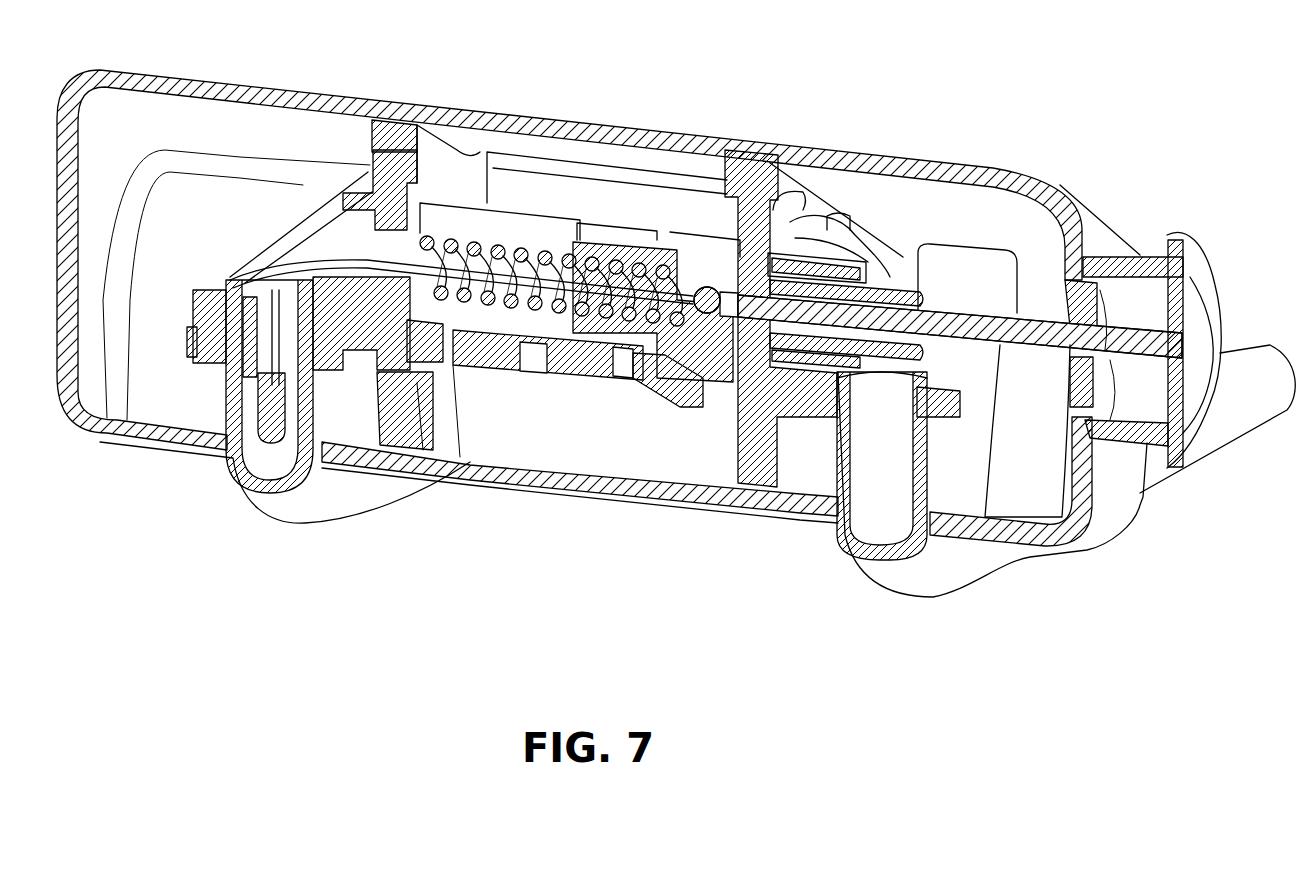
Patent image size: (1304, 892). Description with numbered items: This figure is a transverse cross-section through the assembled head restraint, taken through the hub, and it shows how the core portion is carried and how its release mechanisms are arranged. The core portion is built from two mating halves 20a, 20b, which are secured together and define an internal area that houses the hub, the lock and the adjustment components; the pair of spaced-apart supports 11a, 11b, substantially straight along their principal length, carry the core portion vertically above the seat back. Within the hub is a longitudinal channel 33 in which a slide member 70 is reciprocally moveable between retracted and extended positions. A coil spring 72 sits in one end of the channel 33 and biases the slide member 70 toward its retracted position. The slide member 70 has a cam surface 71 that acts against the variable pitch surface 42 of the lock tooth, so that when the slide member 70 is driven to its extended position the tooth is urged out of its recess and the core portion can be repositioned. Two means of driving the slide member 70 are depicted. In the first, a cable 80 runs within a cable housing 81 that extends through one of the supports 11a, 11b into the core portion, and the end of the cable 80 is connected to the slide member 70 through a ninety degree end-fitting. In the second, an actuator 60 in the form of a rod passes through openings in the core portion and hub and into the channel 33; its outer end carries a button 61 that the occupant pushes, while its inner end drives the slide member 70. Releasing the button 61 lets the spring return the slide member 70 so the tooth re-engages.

The support 11a is at (357, 500).
The support 11b is at (940, 573).
The mating half 20a is at (763, 513).
The mating half 20b is at (993, 170).
The longitudinal channel 33 is at (494, 208).
The variable pitch surface 42 is at (689, 381).
The actuator 60 is at (987, 340).
The button 61 is at (1200, 330).
The slide member 70 is at (630, 247).
The cam surface 71 is at (654, 366).
The coil spring 72 is at (520, 260).
The cable 80 is at (327, 262).
The cable housing 81 is at (258, 435).